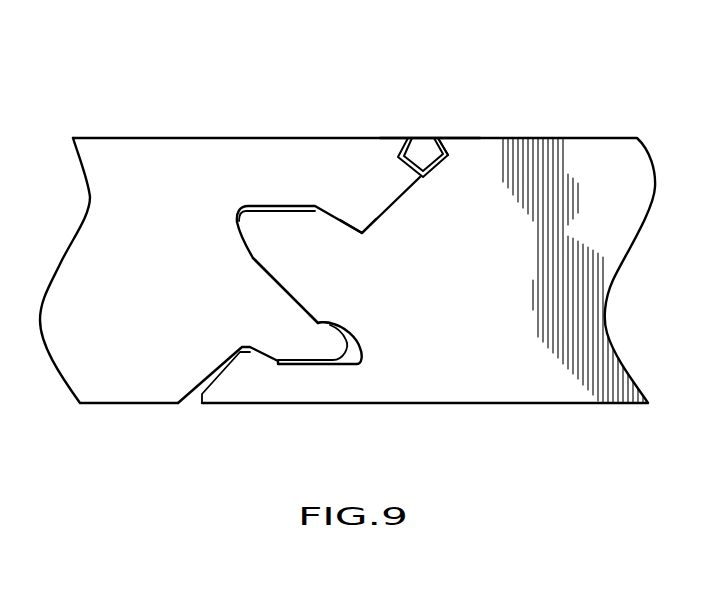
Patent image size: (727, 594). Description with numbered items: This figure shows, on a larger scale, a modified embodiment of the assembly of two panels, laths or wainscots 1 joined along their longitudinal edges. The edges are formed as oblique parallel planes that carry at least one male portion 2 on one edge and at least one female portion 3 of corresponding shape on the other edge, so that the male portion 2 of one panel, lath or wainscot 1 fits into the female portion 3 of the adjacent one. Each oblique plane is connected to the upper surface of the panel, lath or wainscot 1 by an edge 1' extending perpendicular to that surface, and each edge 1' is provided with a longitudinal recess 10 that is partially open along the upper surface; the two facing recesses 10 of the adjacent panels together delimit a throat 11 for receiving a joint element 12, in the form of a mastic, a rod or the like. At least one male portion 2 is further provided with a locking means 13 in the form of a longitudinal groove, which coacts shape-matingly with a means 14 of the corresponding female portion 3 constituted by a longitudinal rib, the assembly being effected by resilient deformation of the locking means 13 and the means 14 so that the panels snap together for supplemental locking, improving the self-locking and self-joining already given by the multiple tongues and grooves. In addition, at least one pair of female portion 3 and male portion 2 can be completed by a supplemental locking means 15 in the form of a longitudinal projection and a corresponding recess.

The panel, lath or wainscot 1 is at (347, 296).
The edge 1' is at (447, 102).
The male portion 2 is at (253, 223).
The female portion 3 is at (278, 204).
The longitudinal recess 10 is at (408, 138).
The throat 11 is at (439, 132).
The joint element 12 is at (423, 152).
The locking means 13 is at (317, 322).
The means 14 is at (317, 322).
The supplemental locking means 15 is at (363, 222).